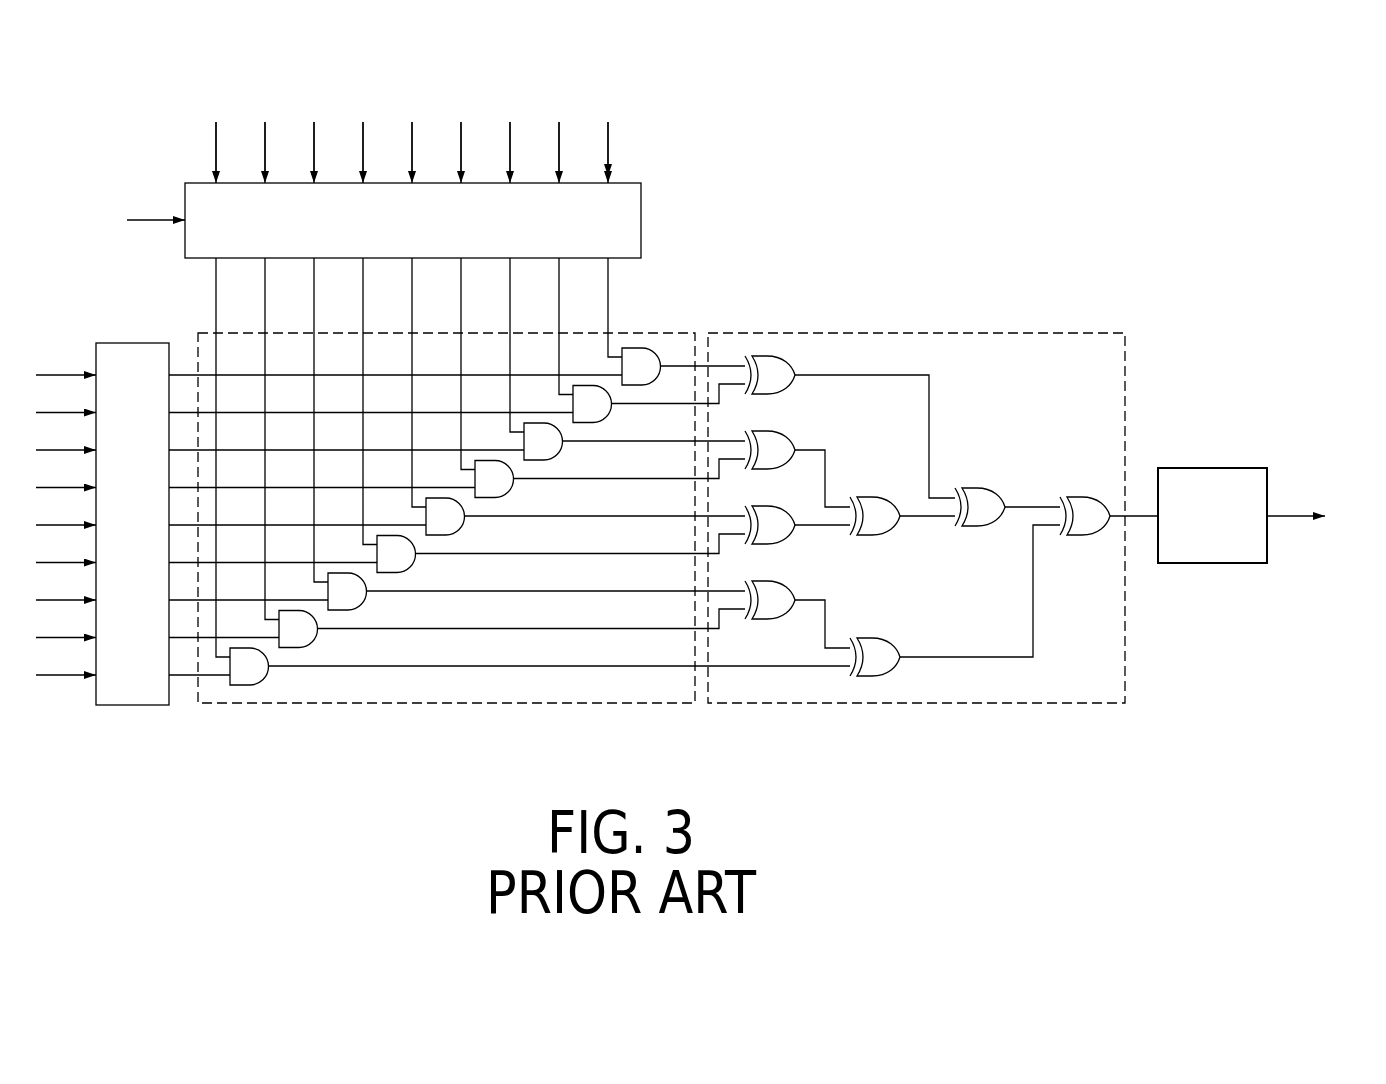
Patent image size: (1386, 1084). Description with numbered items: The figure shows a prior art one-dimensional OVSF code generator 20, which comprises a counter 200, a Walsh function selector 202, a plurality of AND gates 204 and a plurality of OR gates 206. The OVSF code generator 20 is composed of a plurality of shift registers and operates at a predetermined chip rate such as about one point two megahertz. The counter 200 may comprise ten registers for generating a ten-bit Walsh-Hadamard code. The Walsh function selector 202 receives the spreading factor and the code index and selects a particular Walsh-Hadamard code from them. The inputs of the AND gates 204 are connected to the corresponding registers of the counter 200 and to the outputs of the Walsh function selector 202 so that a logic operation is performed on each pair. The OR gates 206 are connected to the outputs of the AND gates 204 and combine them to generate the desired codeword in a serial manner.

The OVSF code generator 20 is at (918, 207).
The counter 200 is at (126, 705).
The Walsh function selector 202 is at (626, 225).
The AND gates 204 is at (388, 703).
The OR gates 206 is at (960, 703).